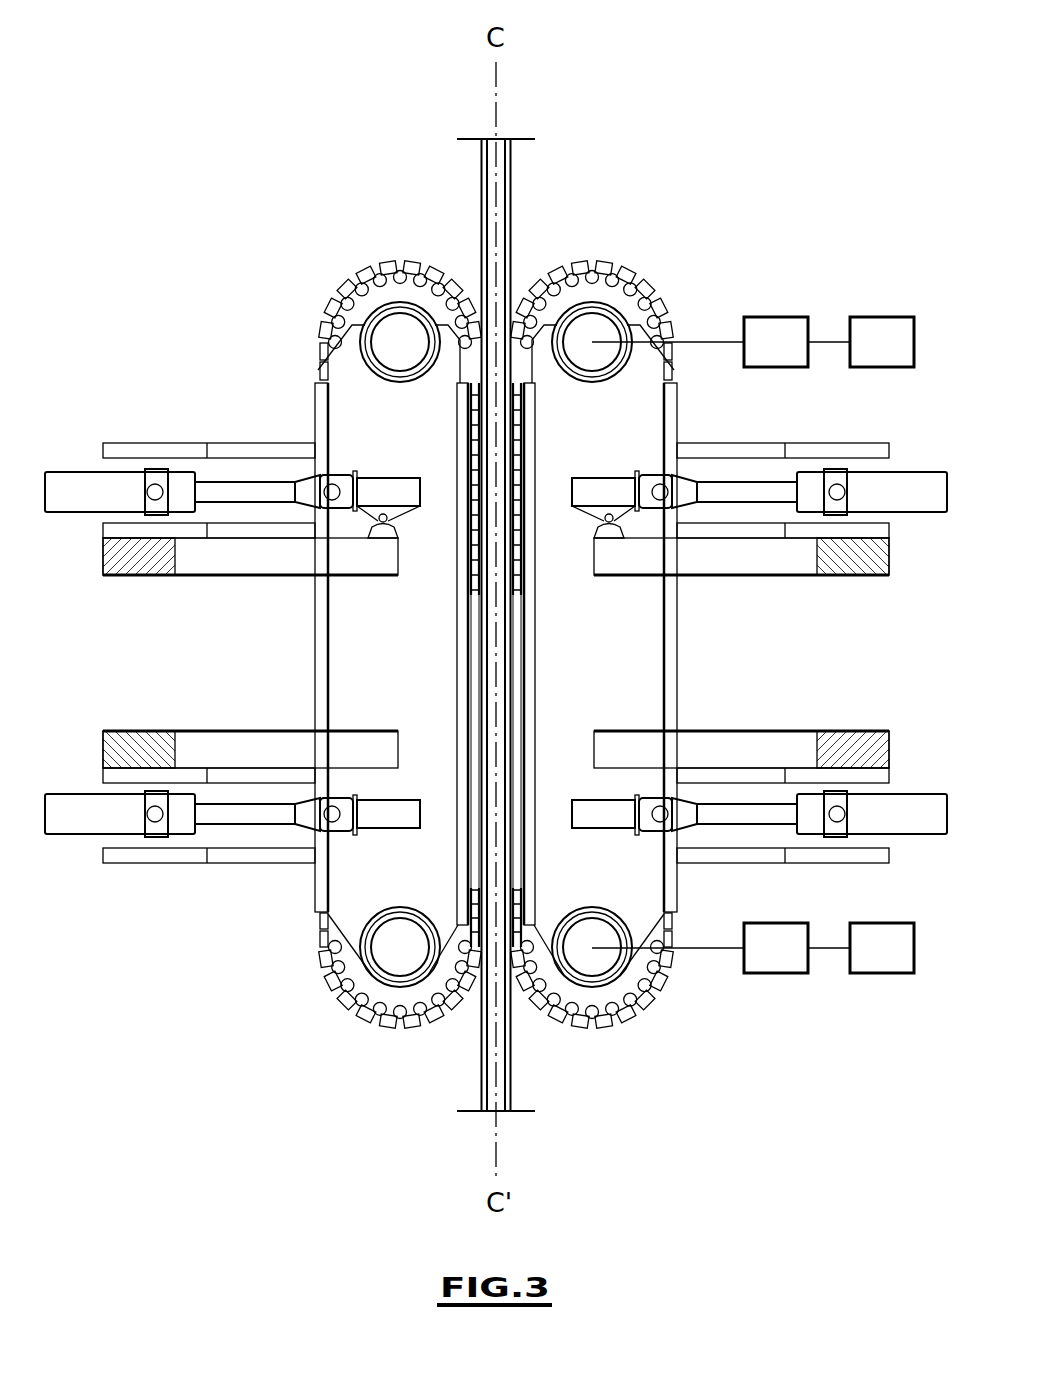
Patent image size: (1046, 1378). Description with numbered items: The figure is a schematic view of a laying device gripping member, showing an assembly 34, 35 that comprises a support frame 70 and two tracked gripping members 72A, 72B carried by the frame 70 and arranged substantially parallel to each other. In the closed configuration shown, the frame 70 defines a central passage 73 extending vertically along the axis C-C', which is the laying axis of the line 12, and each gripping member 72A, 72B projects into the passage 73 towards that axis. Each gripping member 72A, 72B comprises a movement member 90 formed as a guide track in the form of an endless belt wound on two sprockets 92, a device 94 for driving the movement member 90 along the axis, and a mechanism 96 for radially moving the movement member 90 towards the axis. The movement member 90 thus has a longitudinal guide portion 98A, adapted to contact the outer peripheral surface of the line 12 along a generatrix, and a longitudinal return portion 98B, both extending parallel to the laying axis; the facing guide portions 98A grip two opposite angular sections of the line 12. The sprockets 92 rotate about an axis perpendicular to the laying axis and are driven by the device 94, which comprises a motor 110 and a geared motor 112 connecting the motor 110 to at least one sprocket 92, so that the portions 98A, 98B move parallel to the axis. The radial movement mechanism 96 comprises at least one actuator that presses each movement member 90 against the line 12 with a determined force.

The line 12 is at (479, 619).
The central passage 73 is at (512, 990).
The assembly 34 is at (503, 553).
The assembly 35 is at (722, 135).
The support frame 70 is at (112, 415).
The tracked gripping member 72A is at (304, 637).
The tracked gripping member 72B is at (308, 340).
The movement member 90 is at (396, 337).
The sprocket 92 is at (368, 292).
The driving device 94 is at (753, 598).
The radial movement mechanism 96 is at (190, 890).
The guide portion 98A is at (468, 665).
The return portion 98B is at (318, 655).
The motor 110 is at (878, 332).
The geared motor 112 is at (770, 332).